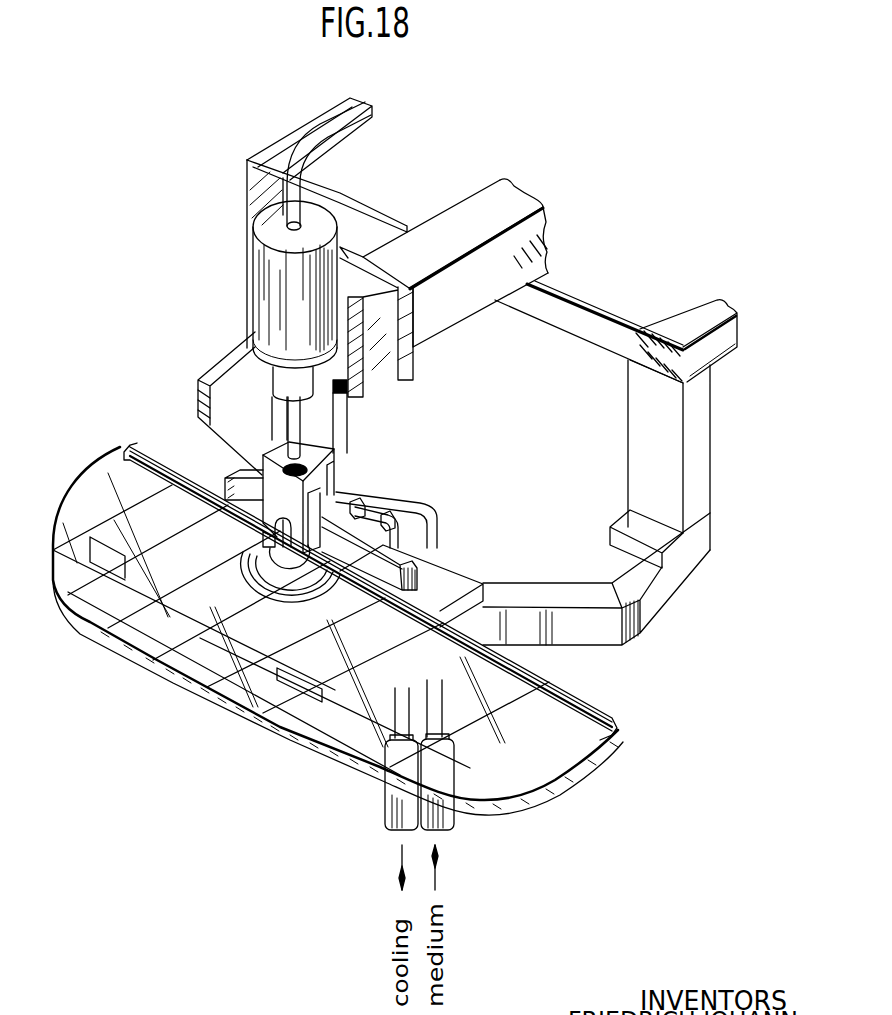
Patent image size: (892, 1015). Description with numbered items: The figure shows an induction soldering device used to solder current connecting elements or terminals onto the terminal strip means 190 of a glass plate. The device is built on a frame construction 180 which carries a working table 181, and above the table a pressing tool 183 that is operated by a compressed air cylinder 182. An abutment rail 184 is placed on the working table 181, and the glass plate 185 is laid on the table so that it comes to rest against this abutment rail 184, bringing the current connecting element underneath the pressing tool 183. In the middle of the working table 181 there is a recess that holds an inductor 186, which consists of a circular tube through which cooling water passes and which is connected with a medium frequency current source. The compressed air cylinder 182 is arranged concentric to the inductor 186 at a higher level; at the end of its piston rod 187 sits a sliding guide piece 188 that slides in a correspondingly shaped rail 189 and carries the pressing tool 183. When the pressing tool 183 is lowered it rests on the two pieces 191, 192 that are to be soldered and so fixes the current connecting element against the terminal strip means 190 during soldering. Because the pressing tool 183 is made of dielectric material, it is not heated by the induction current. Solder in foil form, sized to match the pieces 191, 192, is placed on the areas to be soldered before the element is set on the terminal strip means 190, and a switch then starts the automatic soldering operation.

The frame construction 180 is at (641, 422).
The working table 181 is at (450, 584).
The compressed air cylinder 182 is at (260, 280).
The pressing tool 183 is at (327, 487).
The abutment rail 184 is at (362, 567).
The glass plate 185 is at (517, 750).
The inductor 186 is at (259, 568).
The piston rod 187 is at (290, 414).
The sliding guide piece 188 is at (323, 448).
The rail 189 is at (347, 412).
The terminal strip means 190 is at (577, 705).
The piece to be soldered 191 is at (303, 549).
The piece to be soldered 192 is at (268, 533).